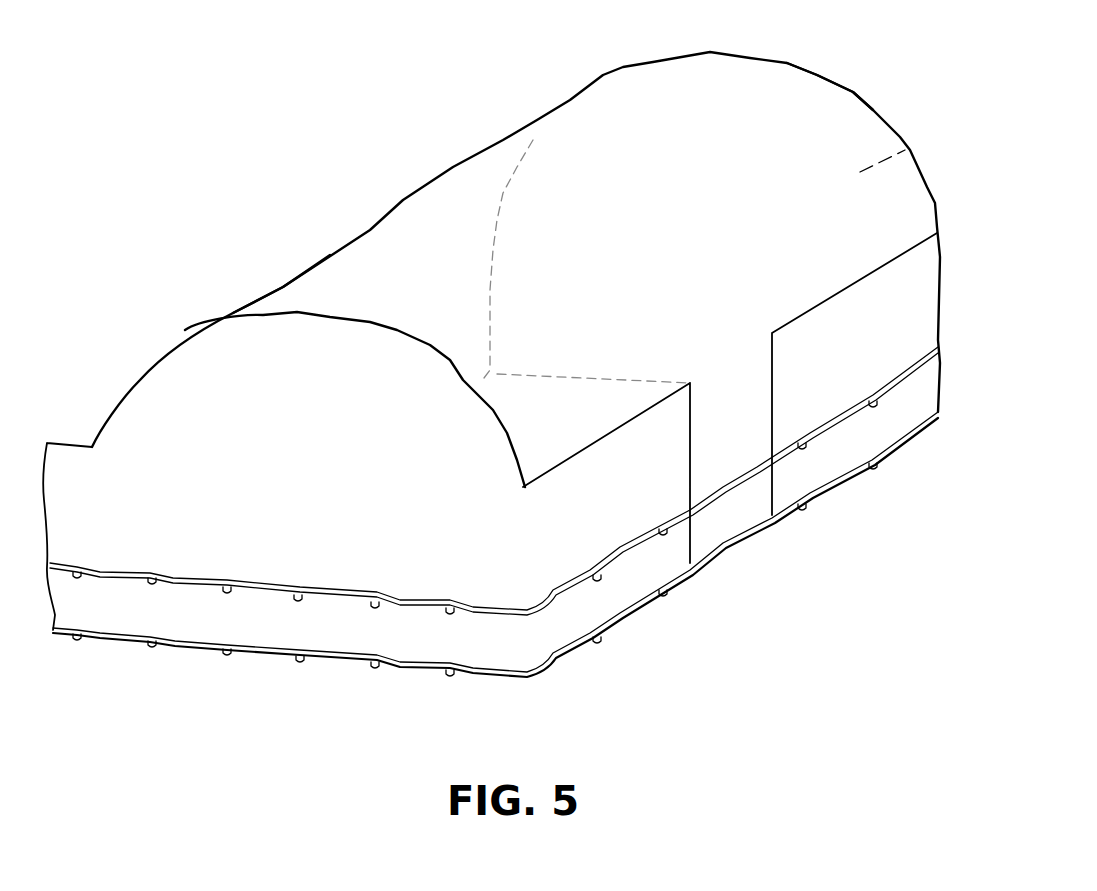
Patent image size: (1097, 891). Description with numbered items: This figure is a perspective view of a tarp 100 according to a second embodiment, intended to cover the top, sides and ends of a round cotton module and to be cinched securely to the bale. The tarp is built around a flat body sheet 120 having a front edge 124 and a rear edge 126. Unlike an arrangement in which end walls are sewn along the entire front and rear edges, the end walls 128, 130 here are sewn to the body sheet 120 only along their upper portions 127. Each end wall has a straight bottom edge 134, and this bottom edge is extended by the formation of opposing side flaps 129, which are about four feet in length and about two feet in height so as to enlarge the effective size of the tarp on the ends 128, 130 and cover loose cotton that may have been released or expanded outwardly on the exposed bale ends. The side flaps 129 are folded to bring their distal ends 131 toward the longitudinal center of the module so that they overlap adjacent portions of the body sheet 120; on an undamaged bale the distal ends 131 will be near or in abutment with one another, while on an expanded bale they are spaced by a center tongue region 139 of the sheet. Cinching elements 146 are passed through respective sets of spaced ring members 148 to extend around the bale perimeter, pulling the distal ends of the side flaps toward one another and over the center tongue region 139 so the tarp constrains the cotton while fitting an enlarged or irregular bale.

The tarp 100 is at (826, 59).
The body sheet 120 is at (408, 218).
The front edge 124 is at (262, 320).
The rear edge 126 is at (858, 92).
The upper portions 127 is at (493, 410).
The end wall 128 is at (215, 368).
The side flaps 129 is at (68, 452).
The end wall 130 is at (910, 150).
The distal ends 131 is at (690, 470).
The straight bottom edge 134 is at (340, 657).
The center tongue region 139 is at (748, 411).
The cinching elements 146 is at (840, 412).
The ring members 148 is at (595, 577).